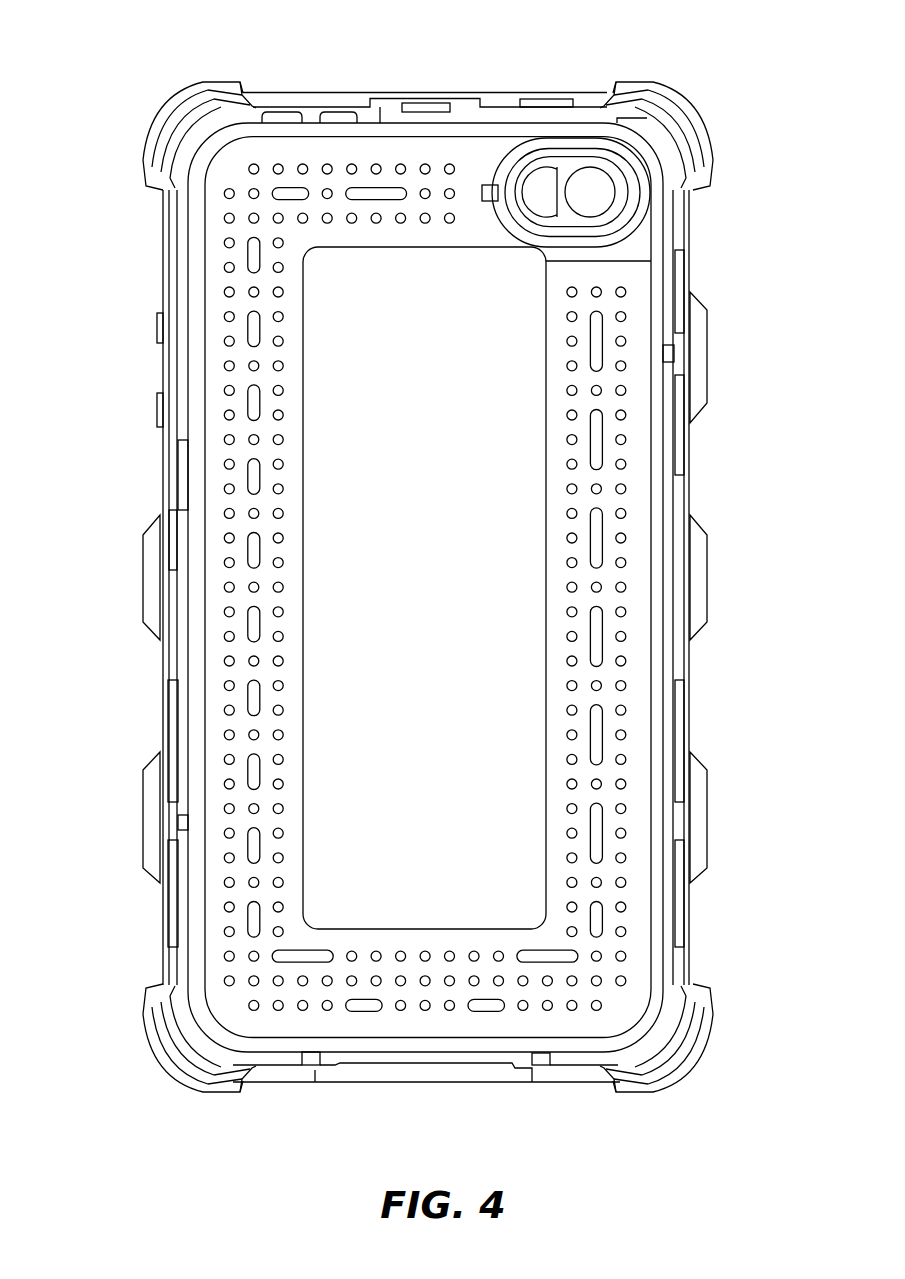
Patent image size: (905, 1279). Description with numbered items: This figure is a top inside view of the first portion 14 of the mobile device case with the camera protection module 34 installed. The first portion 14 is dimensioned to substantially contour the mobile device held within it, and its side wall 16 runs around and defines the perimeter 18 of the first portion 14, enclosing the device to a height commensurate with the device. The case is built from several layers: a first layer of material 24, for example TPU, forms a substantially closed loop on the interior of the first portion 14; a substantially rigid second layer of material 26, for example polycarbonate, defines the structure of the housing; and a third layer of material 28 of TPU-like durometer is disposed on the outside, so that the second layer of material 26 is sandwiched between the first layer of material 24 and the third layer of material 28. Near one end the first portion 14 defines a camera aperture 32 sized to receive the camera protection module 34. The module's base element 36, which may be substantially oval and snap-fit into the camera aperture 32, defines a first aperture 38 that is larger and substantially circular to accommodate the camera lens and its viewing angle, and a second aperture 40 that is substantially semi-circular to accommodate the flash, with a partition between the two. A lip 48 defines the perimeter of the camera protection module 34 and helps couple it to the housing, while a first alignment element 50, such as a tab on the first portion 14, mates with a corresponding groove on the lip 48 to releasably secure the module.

The first portion 14 is at (698, 72).
The side wall 16 is at (689, 470).
The perimeter 18 is at (689, 935).
The first layer of material 24 is at (250, 920).
The second layer of material 26 is at (333, 727).
The third layer of material 28 is at (708, 350).
The camera aperture 32 is at (588, 143).
The camera protection module 34 is at (632, 207).
The base element 36 is at (520, 170).
The first aperture 38 is at (600, 192).
The second aperture 40 is at (547, 180).
The lip 48 is at (622, 242).
The first alignment element 50 is at (483, 190).